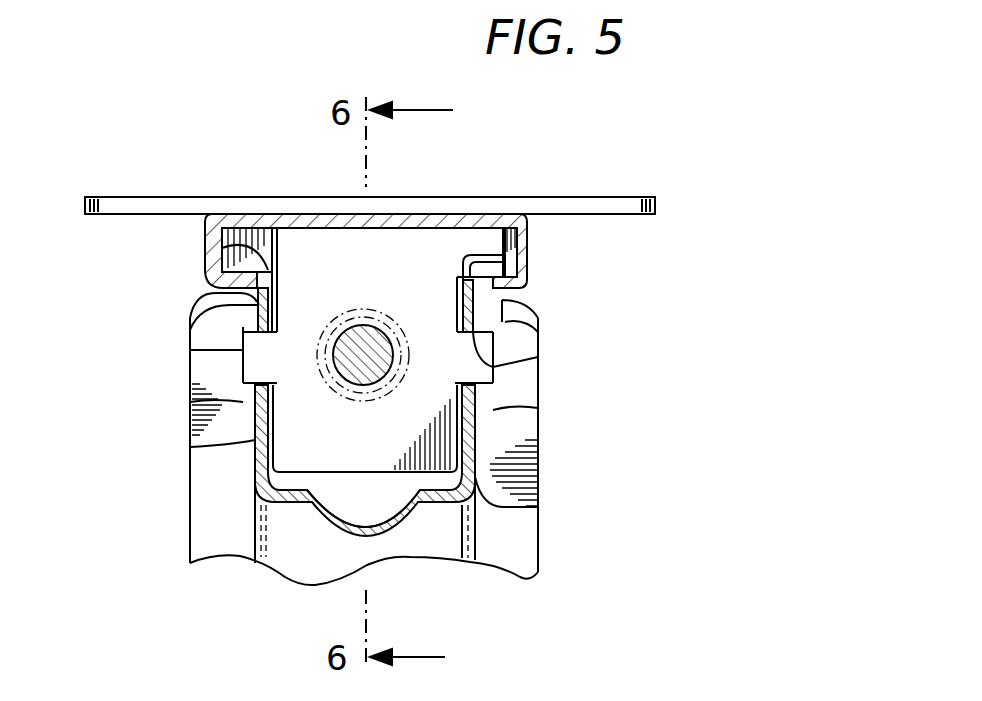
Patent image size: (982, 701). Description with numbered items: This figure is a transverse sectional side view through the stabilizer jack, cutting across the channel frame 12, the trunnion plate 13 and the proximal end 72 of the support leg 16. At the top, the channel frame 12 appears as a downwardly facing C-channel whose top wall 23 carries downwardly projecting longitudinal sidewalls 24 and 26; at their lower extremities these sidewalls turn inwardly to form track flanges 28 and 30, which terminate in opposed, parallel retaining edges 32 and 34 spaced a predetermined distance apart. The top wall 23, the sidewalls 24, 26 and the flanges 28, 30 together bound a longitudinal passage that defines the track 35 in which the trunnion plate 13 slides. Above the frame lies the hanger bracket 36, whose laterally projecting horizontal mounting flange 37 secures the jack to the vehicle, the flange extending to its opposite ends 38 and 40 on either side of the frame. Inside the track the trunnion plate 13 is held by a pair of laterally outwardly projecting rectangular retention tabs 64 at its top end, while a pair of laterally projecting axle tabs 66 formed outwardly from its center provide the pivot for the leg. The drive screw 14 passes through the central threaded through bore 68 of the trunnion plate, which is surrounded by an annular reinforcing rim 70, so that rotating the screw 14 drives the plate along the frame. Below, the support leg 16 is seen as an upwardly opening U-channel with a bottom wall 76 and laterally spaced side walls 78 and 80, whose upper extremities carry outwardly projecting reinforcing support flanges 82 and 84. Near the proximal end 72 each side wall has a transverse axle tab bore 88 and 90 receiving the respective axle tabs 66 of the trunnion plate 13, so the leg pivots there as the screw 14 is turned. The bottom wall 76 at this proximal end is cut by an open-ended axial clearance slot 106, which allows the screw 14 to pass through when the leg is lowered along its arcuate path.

The channel frame 12 is at (426, 209).
The trunnion plate 13 is at (387, 482).
The drive screw 14 is at (360, 390).
The support leg 16 is at (272, 582).
The top wall 23 is at (303, 217).
The sidewall 24 is at (527, 270).
The sidewall 26 is at (203, 259).
The track flange 28 is at (540, 325).
The track flange 30 is at (192, 325).
The retaining edge 32 is at (503, 258).
The retaining edge 34 is at (222, 248).
The track 35 is at (351, 231).
The hanger bracket 36 is at (203, 186).
The horizontal mounting flange 37 is at (395, 196).
The plate left end 38 is at (103, 194).
The plate right end 40 is at (620, 196).
The retention tabs 64 is at (273, 220).
The axle tabs 66 is at (190, 402).
The threaded through bore 68 is at (362, 323).
The annular reinforcing rim 70 is at (390, 395).
The proximal end 72 is at (482, 432).
The bottom wall 76 is at (448, 540).
The side wall 78 is at (538, 522).
The side wall 80 is at (190, 447).
The reinforcing support flange 82 is at (545, 503).
The reinforcing support flange 84 is at (190, 510).
The axle tab bore 88 is at (538, 356).
The axle tab bore 90 is at (190, 351).
The axial clearance slot 106 is at (353, 525).